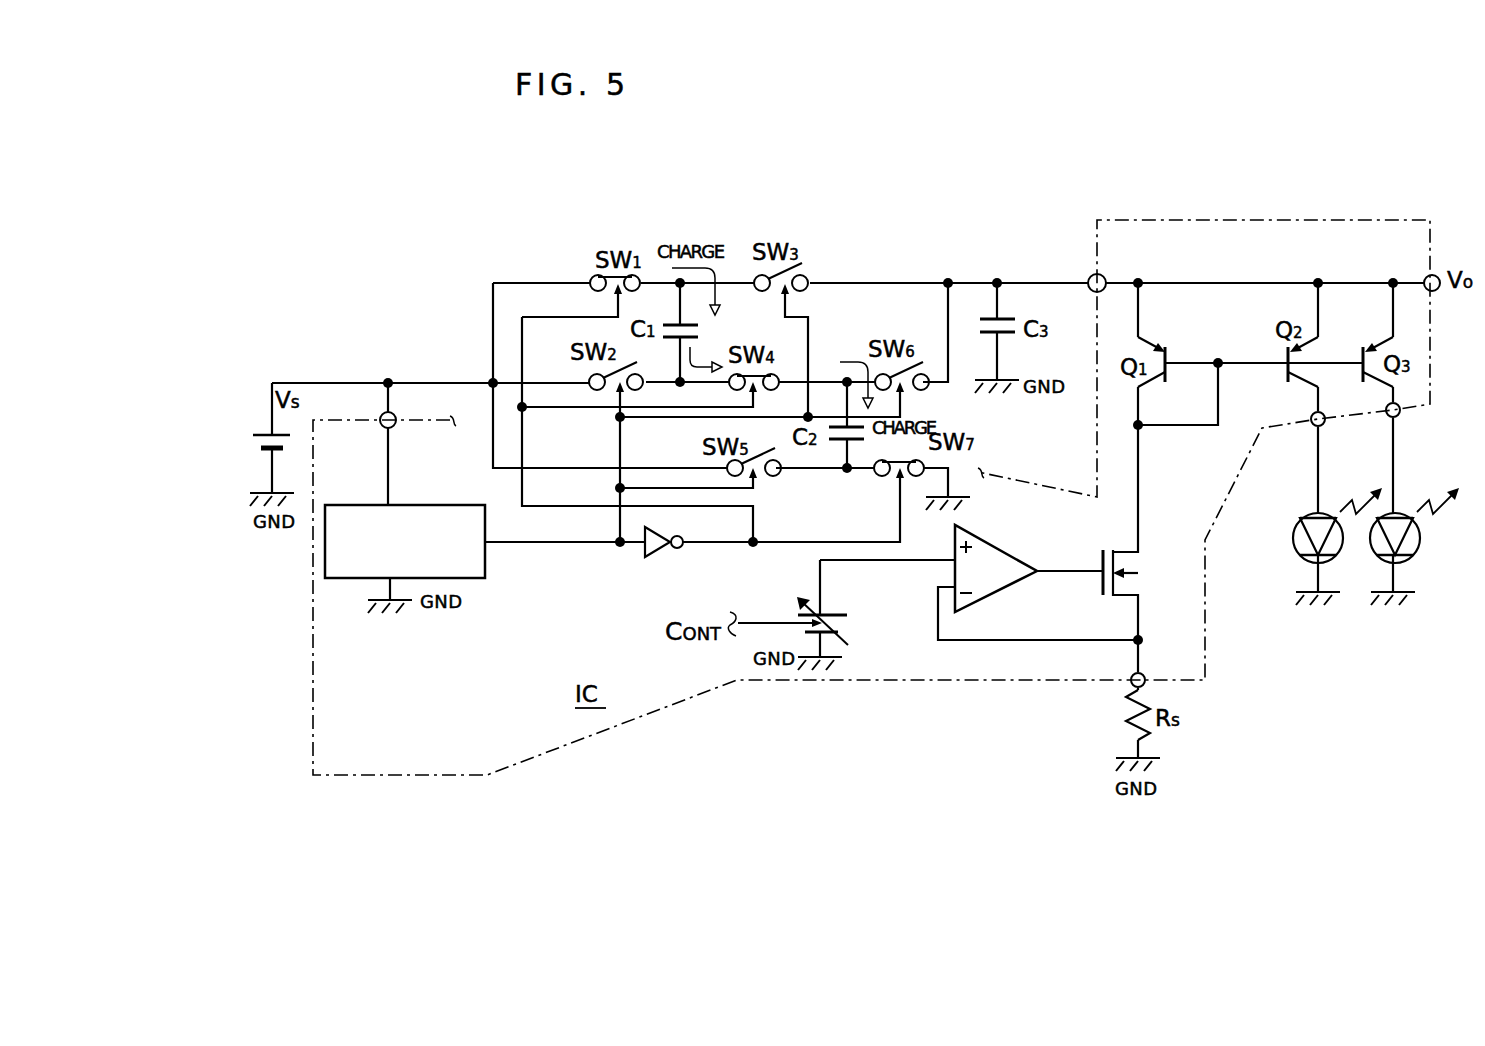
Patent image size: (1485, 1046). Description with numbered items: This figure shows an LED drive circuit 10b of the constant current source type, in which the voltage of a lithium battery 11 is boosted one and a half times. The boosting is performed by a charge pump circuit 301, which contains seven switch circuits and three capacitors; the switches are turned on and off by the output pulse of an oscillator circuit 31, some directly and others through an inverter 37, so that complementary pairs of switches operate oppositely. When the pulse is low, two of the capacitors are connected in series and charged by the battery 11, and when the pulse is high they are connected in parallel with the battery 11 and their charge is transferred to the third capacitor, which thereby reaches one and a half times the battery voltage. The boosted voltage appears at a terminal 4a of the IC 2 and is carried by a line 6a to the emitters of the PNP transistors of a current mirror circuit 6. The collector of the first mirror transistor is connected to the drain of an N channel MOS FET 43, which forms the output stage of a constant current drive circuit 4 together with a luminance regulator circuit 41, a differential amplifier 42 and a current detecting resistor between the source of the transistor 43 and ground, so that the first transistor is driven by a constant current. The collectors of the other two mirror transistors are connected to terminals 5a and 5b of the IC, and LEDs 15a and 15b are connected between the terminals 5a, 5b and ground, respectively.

The LED drive circuit 10b is at (988, 134).
The lithium battery 11 is at (253, 437).
The oscillator circuit 31 is at (437, 505).
The inverter 37 is at (646, 558).
The charge pump circuit 301 is at (663, 610).
The luminance regulator circuit 41 is at (840, 612).
The differential amplifier 42 is at (998, 546).
The N channel MOS FET 43 is at (1132, 553).
The constant current drive circuit 4 is at (951, 669).
The terminal 4a is at (1090, 278).
The current mirror circuit 6 is at (1293, 238).
The line 6a is at (1222, 283).
The drive circuit IC boundary 2 is at (1190, 552).
The terminal 5a is at (1312, 428).
The terminal 5b is at (1400, 418).
The LED 15a is at (1300, 556).
The LED 15b is at (1420, 547).